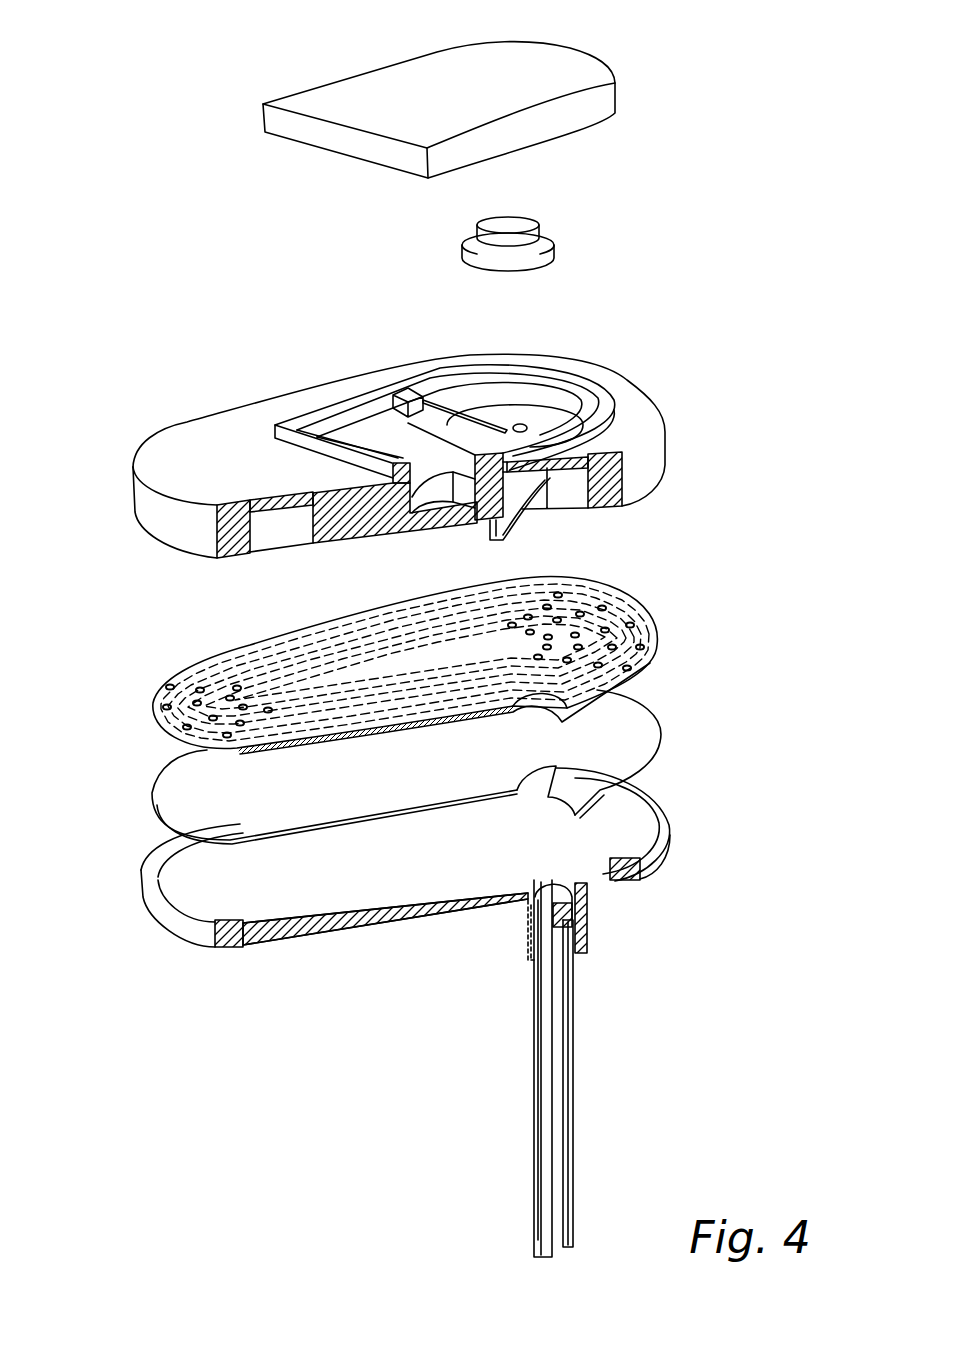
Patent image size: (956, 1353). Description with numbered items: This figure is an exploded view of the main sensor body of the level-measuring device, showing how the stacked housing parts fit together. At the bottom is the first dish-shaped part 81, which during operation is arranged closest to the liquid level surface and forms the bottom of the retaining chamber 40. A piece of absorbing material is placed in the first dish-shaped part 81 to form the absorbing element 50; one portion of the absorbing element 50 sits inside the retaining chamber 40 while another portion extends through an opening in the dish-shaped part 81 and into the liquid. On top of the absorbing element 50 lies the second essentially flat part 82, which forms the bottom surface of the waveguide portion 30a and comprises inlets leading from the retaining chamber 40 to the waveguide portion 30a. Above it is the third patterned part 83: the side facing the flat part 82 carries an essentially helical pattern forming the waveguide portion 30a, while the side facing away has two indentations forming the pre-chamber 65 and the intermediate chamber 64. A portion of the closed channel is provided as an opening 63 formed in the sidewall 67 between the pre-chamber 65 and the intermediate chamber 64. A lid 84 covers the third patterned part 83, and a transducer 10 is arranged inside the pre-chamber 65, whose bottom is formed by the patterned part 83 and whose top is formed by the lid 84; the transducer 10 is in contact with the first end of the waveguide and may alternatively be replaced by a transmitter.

The lid 84 is at (355, 92).
The transducer 10 is at (553, 252).
The third patterned part 83 is at (351, 455).
The intermediate chamber 64 is at (365, 437).
The opening 63 is at (400, 390).
The sidewall 67 is at (462, 428).
The pre-chamber 65 is at (503, 412).
The waveguide portion 30a is at (283, 538).
The second essentially flat part 82 is at (155, 695).
The absorbing element 50 is at (267, 790).
The retaining chamber 40 is at (211, 880).
The first dish-shaped part 81 is at (173, 922).